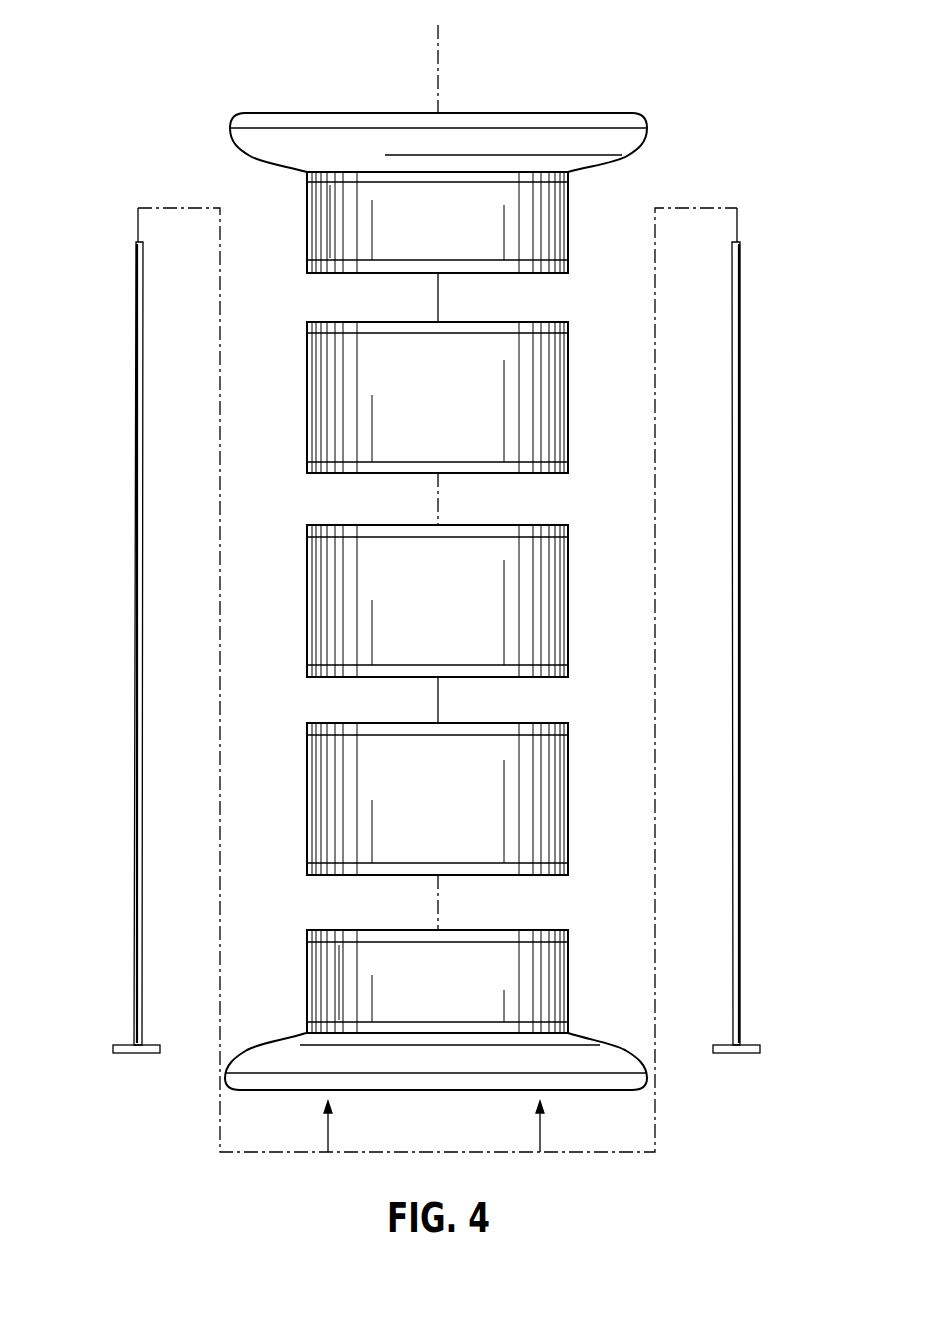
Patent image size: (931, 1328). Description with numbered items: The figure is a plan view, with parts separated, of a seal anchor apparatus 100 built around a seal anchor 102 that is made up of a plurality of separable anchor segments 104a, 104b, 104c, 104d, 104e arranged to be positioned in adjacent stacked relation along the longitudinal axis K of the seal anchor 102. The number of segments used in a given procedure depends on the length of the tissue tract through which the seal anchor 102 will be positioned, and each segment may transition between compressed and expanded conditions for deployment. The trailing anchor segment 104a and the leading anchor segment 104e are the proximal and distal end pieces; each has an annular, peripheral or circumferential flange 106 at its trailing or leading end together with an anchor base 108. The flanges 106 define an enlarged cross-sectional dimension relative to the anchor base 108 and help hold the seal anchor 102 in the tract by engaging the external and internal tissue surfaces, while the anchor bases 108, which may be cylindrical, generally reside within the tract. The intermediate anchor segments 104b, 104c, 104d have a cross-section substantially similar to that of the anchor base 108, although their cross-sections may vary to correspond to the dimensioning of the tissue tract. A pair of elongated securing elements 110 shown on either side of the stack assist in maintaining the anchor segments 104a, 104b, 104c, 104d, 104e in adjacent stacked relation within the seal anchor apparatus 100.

The seal anchor apparatus 100 is at (122, 161).
The seal anchor 102 is at (612, 198).
The trailing anchor segment 104a is at (460, 228).
The intermediate anchor segment 104b is at (460, 415).
The intermediate anchor segment 104c is at (460, 615).
The intermediate anchor segment 104d is at (460, 815).
The leading anchor segment 104e is at (460, 995).
The flange 106 is at (622, 140).
The anchor base 108 is at (328, 215).
The elongated securing element 110 is at (136, 572).
The longitudinal axis K is at (440, 87).